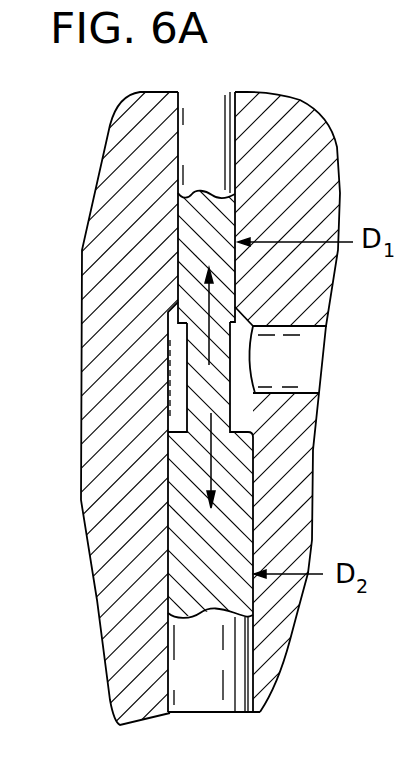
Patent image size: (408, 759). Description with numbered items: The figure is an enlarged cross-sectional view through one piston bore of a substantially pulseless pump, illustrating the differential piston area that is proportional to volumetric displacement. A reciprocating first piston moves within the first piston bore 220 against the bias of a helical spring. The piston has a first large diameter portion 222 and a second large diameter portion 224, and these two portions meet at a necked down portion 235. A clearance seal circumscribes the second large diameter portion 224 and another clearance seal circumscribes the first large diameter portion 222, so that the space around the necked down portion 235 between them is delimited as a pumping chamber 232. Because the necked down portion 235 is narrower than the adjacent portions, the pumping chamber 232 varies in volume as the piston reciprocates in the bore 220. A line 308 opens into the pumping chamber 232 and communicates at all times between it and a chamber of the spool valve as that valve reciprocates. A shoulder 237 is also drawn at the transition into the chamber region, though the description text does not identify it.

The bore passage 220 is at (183, 140).
The upper valve member portion 224 is at (203, 223).
The chamfered shoulder 237 is at (170, 322).
The annular chamber 232 is at (170, 367).
The reduced-diameter stem 235 is at (197, 400).
The lower valve member portion 222 is at (183, 483).
The radial port 308 is at (275, 385).